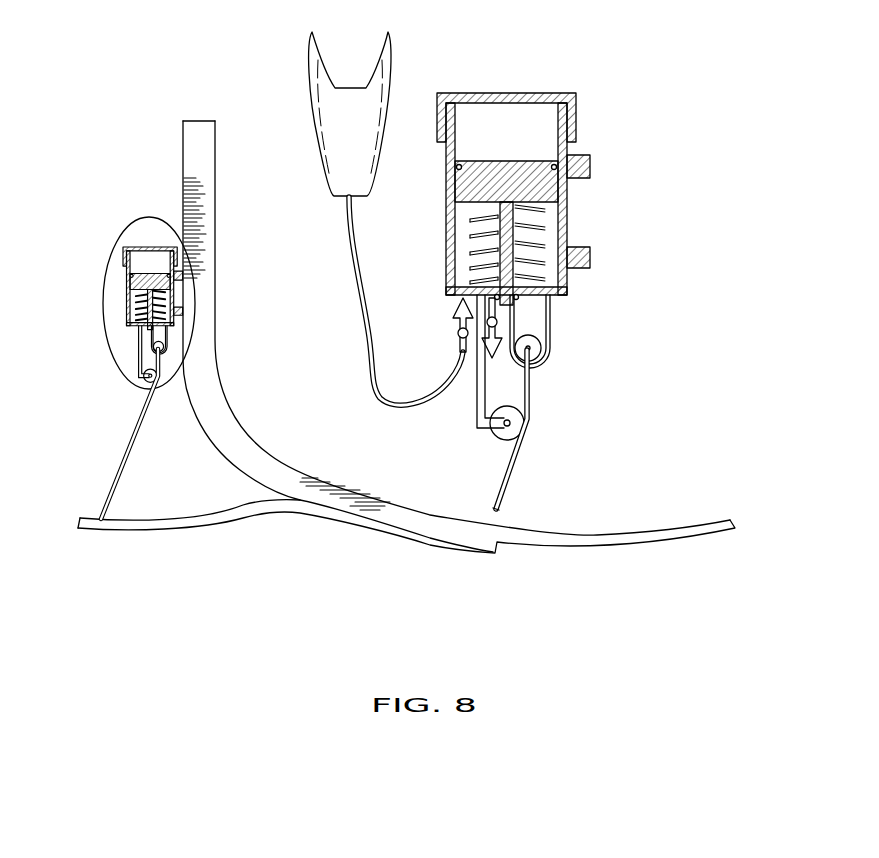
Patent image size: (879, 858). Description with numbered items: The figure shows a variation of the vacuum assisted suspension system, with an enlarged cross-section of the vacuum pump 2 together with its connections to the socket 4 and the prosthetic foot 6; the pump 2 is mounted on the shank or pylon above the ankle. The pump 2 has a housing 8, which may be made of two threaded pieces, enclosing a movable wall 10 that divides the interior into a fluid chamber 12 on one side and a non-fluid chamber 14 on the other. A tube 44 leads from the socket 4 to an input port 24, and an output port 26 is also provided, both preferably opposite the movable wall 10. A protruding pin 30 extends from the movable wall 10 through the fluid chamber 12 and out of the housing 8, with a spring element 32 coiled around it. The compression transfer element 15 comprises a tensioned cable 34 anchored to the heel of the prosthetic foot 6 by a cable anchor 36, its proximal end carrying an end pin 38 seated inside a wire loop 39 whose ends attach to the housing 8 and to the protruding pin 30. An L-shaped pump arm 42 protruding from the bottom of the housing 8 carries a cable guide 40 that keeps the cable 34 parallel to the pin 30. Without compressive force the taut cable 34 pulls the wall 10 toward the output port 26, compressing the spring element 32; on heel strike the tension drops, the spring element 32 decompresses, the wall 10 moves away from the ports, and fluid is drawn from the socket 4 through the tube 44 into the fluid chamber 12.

The vacuum pump 2 is at (389, 232).
The socket 4 is at (312, 45).
The prosthetic foot 6 is at (184, 122).
The housing 8 is at (578, 122).
The movable wall 10 is at (567, 187).
The fluid chamber 12 is at (567, 227).
The non-fluid chamber 14 is at (500, 114).
The compression transfer element 15 is at (131, 402).
The input port 24 is at (458, 313).
The output port 26 is at (512, 352).
The protruding pin 30 is at (457, 212).
The spring element 32 is at (580, 267).
The tensioned cable 34 is at (515, 470).
The cable anchor 36 is at (98, 520).
The end pin 38 is at (530, 353).
The wire loop 39 is at (548, 338).
The cable guide 40 is at (518, 425).
The pump arm 42 is at (477, 413).
The tube 44 is at (361, 315).